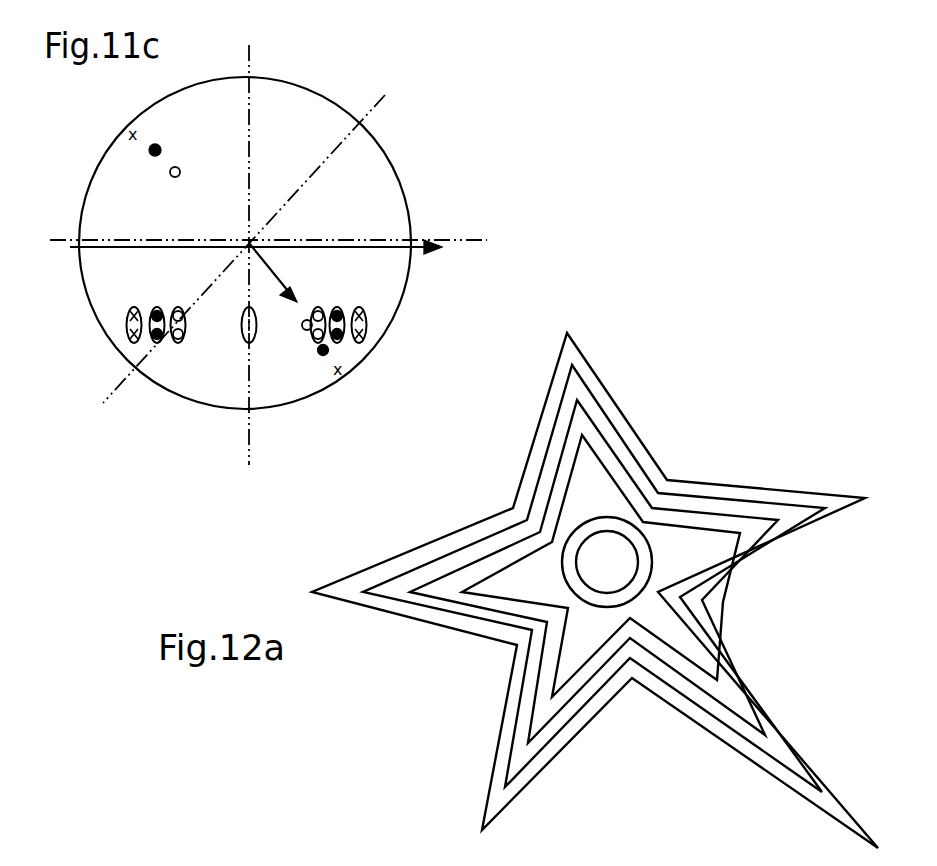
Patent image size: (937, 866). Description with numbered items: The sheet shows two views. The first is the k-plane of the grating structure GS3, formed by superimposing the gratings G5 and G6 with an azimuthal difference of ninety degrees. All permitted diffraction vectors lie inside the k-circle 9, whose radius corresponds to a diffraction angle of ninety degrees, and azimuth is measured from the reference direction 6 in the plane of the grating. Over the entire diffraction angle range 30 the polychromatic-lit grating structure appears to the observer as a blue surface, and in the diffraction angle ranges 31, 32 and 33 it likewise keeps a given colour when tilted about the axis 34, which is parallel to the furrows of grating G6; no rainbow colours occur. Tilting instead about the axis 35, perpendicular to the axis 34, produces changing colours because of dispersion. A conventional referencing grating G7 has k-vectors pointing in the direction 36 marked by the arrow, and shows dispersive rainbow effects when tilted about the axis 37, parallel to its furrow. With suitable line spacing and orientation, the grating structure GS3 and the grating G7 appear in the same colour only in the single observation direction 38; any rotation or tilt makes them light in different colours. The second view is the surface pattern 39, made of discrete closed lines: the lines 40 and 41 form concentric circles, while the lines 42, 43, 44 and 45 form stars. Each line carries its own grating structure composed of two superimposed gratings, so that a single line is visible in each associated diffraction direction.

In FIG. 11C, the reference direction 6 is at (418, 242).
In FIG. 11C, the k-circle 9 is at (165, 392).
In FIG. 11C, the diffraction angle range 30 is at (246, 342).
In FIG. 11C, the diffraction angle range 31 is at (316, 342).
In FIG. 11C, the diffraction angle range 32 is at (345, 345).
In FIG. 11C, the diffraction angle range 33 is at (365, 322).
In FIG. 11C, the axis 34 is at (482, 248).
In FIG. 11C, the axis 35 is at (252, 88).
In FIG. 11C, the direction 36 is at (273, 273).
In FIG. 11C, the axis 37 is at (360, 122).
In FIG. 11C, the observation direction 38 is at (302, 348).
In FIG. 12A, the surface pattern 39 is at (597, 590).
In FIG. 12A, the closed line 40 is at (636, 548).
In FIG. 12A, the closed line 41 is at (652, 557).
In FIG. 12A, the closed line 42 is at (720, 547).
In FIG. 12A, the closed line 43 is at (780, 530).
In FIG. 12A, the closed line 44 is at (820, 513).
In FIG. 12A, the closed line 45 is at (849, 491).